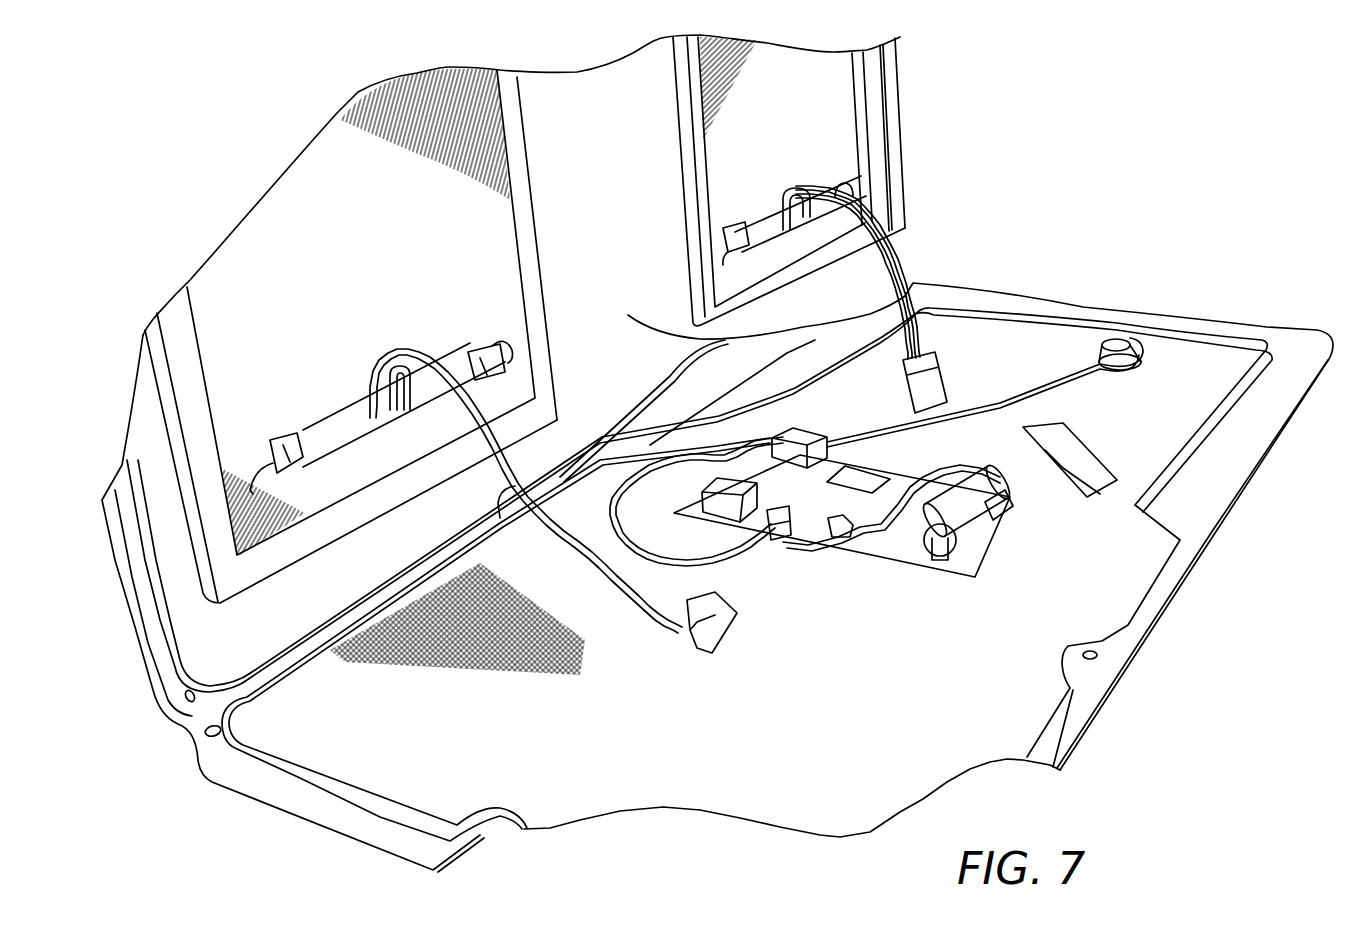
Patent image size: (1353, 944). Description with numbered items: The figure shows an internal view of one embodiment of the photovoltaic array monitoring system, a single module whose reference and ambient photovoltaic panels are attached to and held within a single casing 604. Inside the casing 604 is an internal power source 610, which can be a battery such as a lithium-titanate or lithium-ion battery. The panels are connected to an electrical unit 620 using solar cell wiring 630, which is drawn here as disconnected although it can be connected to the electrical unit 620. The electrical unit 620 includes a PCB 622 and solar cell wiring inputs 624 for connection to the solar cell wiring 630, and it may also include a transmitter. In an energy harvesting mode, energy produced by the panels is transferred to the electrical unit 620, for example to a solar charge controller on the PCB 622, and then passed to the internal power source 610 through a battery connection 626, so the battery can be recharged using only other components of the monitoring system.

The casing 604 is at (933, 292).
The internal power source 610 is at (1010, 507).
The electrical unit 620 is at (845, 545).
The PCB 622 is at (812, 542).
The solar cell wiring inputs 624 is at (795, 427).
The battery connection 626 is at (957, 500).
The solar cell wiring 630 is at (601, 485).